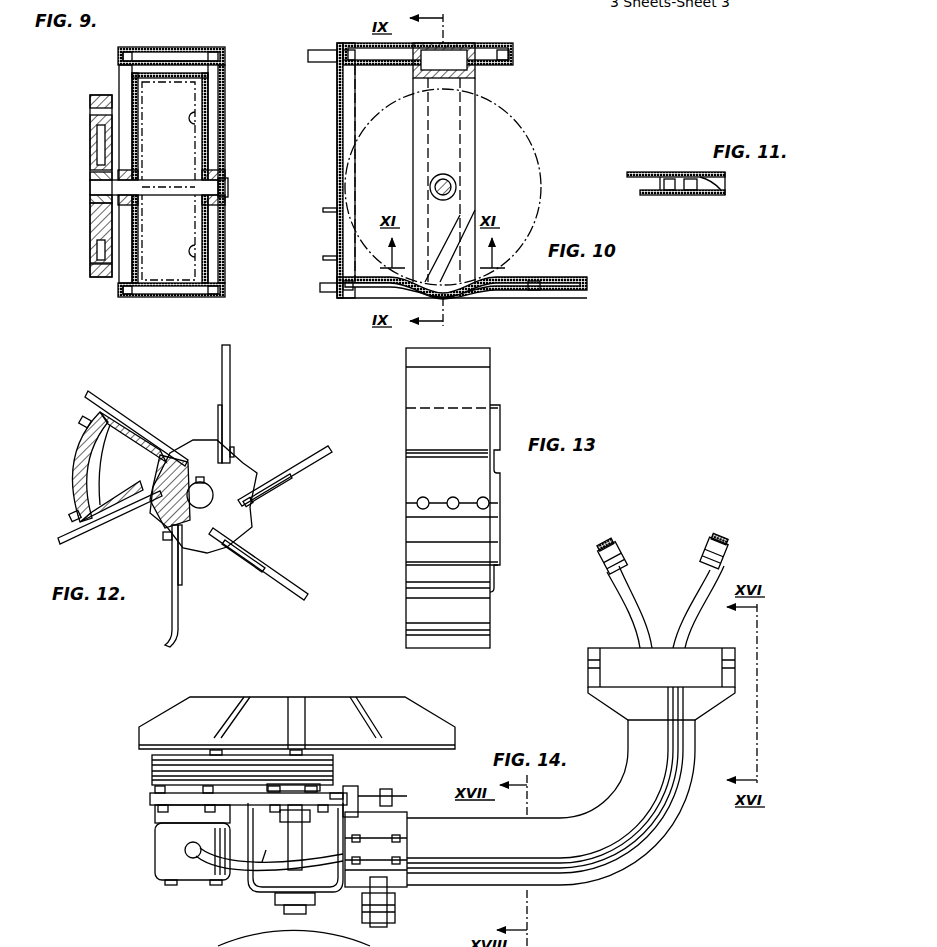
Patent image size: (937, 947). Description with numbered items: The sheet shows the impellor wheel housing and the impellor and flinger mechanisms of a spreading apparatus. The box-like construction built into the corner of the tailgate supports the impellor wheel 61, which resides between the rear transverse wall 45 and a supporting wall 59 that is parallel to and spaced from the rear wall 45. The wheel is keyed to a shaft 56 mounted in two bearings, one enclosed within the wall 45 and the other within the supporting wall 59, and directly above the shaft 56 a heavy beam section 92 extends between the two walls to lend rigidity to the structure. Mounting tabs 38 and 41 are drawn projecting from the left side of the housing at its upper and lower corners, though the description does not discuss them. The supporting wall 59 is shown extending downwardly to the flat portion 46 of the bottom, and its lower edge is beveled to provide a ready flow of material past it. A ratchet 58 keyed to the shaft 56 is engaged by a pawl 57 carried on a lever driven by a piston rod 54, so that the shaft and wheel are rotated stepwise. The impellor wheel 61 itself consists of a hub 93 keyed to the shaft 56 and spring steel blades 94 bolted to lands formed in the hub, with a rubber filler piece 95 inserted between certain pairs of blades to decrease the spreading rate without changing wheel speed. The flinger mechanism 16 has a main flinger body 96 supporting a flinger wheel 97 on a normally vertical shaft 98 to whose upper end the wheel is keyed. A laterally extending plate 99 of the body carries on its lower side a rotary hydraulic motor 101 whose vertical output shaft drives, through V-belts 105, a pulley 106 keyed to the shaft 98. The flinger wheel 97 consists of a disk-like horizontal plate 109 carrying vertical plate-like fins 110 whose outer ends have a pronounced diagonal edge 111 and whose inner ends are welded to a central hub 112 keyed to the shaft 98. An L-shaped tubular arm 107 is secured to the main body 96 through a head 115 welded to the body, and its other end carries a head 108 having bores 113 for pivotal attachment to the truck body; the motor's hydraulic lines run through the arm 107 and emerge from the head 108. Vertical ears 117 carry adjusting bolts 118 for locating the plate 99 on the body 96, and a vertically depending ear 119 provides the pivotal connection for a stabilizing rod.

In FIG. 14, the flinger mechanism 16 is at (397, 863).
In FIG. 10, the mounting tab 38 is at (325, 50).
In FIG. 10, the mounting tab 41 is at (318, 291).
In FIG. 9, the rear transverse wall 45 is at (130, 72).
In FIG. 9, the flat portion of the bottom 46 is at (172, 297).
In FIG. 10, the flat portion of the bottom 46 is at (517, 284).
In FIG. 9, the piston rod 54 is at (100, 277).
In FIG. 9, the shaft 56 is at (90, 188).
In FIG. 10, the shaft 56 is at (458, 186).
In FIG. 9, the pawl 57 is at (100, 95).
In FIG. 9, the ratchet 58 is at (90, 142).
In FIG. 9, the supporting wall 59 is at (221, 49).
In FIG. 11, the supporting wall 59 is at (650, 172).
In FIG. 9, the impellor wheel 61 is at (192, 112).
In FIG. 10, the impellor wheel 61 is at (528, 131).
In FIG. 12, the impellor wheel 61 is at (165, 636).
In FIG. 13, the impellor wheel 61 is at (494, 378).
In FIG. 9, the heavy beam section 92 is at (166, 47).
In FIG. 10, the heavy beam section 92 is at (462, 47).
In FIG. 12, the hub 93 is at (207, 440).
In FIG. 13, the hub 93 is at (410, 526).
In FIG. 12, the spring steel blades 94 is at (278, 575).
In FIG. 13, the spring steel blades 94 is at (406, 375).
In FIG. 12, the filler piece 95 is at (70, 474).
In FIG. 14, the main flinger body 96 is at (258, 890).
In FIG. 14, the flinger wheel 97 is at (207, 705).
In FIG. 14, the shaft 98 is at (303, 846).
In FIG. 14, the laterally extending plate 99 is at (150, 799).
In FIG. 14, the rotary hydraulic motor 101 is at (155, 845).
In FIG. 14, the V-belts 105 is at (152, 766).
In FIG. 14, the pulley 106 is at (333, 770).
In FIG. 14, the L-shaped tubular arm 107 is at (575, 848).
In FIG. 14, the head 108 is at (603, 648).
In FIG. 14, the disk-like horizontal plate 109 is at (140, 748).
In FIG. 14, the plate-like fins 110 is at (367, 708).
In FIG. 14, the diagonal edge 111 is at (425, 710).
In FIG. 14, the central hub 112 is at (296, 705).
In FIG. 14, the bore 113 is at (590, 668).
In FIG. 14, the head 115 is at (413, 888).
In FIG. 14, the vertical ears 117 is at (360, 792).
In FIG. 14, the adjusting bolts 118 is at (392, 796).
In FIG. 14, the vertically depending ear 119 is at (390, 895).